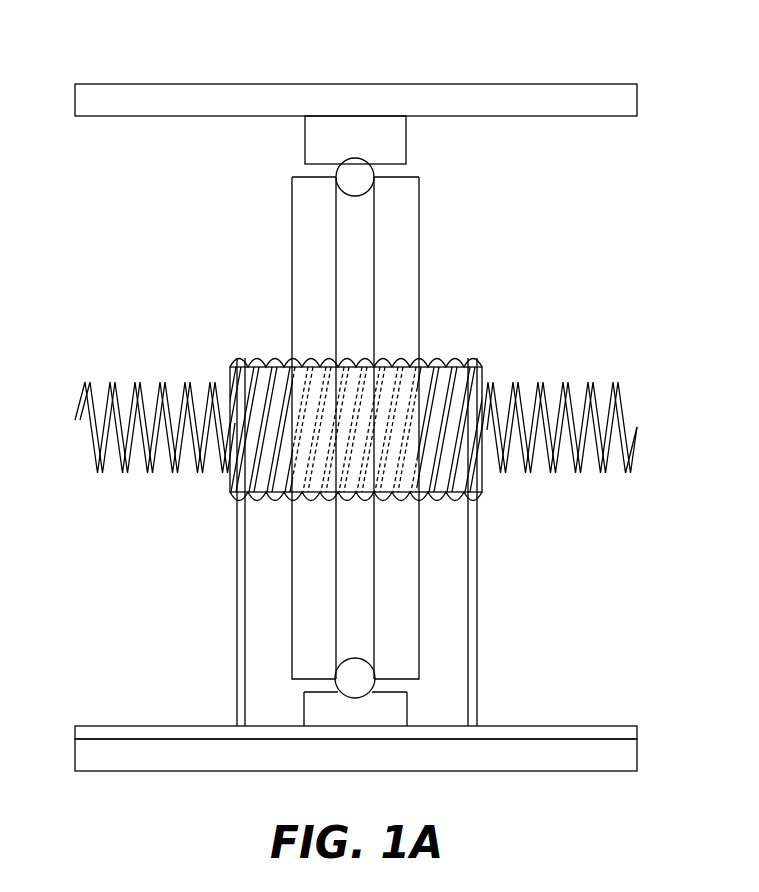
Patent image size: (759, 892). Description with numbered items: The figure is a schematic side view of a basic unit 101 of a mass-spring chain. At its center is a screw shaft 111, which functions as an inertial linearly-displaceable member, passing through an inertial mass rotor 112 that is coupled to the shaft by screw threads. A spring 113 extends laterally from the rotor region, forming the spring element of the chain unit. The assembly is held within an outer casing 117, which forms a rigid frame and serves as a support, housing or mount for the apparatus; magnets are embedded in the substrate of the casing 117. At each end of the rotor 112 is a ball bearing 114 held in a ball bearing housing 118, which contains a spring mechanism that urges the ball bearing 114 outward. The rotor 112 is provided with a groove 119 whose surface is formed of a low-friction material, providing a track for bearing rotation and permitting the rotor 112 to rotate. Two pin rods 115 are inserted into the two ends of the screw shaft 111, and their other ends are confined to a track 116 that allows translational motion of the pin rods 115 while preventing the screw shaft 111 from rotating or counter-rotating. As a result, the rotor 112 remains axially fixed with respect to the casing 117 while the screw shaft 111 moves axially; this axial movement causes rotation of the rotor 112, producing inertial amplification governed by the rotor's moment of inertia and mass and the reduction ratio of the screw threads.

The basic unit 101 is at (645, 177).
The screw shaft 111 is at (250, 356).
The inertial mass rotor 112 is at (292, 210).
The spring 113 is at (563, 382).
The ball bearing 114 is at (372, 170).
The pin rod 115 is at (237, 578).
The track 116 is at (147, 726).
The outer casing 117 is at (113, 84).
The ball bearing housing 118 is at (305, 133).
The groove 119 is at (357, 230).